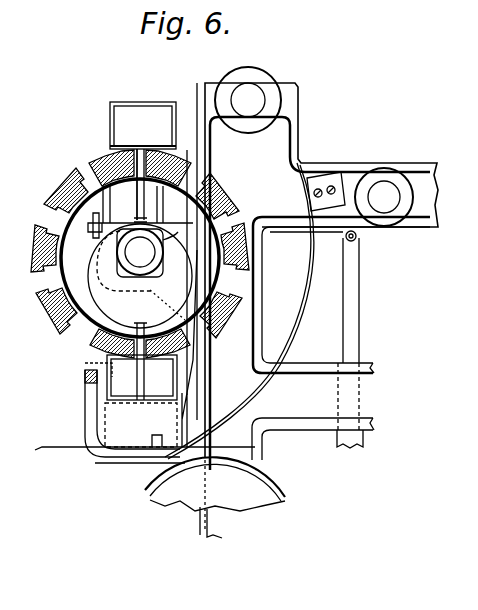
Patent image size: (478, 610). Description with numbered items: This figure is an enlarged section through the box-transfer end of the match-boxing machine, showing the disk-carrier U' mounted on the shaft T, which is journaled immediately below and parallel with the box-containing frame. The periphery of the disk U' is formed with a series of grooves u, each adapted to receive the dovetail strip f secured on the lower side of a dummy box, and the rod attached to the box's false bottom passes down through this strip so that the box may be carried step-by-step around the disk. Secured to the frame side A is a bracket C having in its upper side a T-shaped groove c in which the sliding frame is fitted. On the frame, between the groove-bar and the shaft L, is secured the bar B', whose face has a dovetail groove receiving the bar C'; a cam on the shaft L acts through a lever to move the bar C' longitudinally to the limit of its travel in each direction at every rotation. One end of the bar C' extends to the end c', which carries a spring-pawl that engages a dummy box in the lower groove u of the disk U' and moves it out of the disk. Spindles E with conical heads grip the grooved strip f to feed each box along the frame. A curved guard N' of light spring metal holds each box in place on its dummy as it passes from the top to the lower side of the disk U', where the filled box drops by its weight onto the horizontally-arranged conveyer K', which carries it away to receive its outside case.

The shaft T is at (140, 258).
The T-shaped groove c is at (129, 274).
The end of bar c' is at (178, 219).
The bracket C is at (143, 252).
The groove u is at (56, 222).
The disk U' is at (35, 257).
The shaft L is at (97, 298).
The strip f is at (124, 344).
The bar C' is at (135, 353).
The conveyer K' is at (145, 470).
The curved guard N' is at (316, 339).
The bar B' is at (239, 311).
The frame side A is at (262, 452).
The spindle E is at (459, 406).
The part e is at (462, 496).